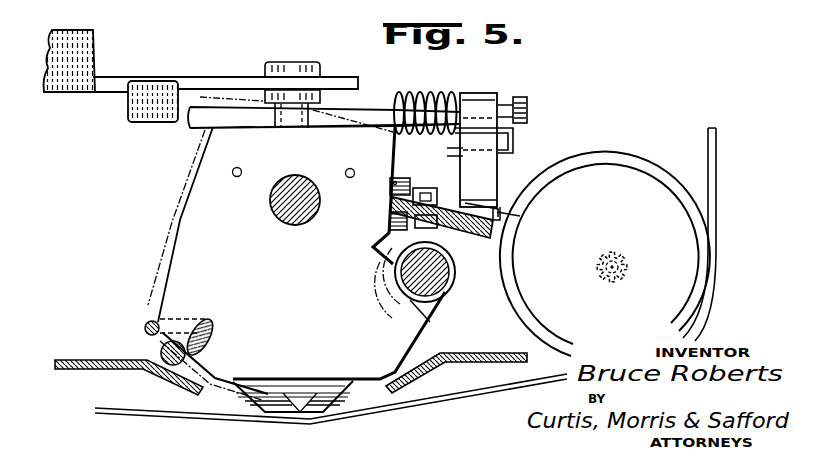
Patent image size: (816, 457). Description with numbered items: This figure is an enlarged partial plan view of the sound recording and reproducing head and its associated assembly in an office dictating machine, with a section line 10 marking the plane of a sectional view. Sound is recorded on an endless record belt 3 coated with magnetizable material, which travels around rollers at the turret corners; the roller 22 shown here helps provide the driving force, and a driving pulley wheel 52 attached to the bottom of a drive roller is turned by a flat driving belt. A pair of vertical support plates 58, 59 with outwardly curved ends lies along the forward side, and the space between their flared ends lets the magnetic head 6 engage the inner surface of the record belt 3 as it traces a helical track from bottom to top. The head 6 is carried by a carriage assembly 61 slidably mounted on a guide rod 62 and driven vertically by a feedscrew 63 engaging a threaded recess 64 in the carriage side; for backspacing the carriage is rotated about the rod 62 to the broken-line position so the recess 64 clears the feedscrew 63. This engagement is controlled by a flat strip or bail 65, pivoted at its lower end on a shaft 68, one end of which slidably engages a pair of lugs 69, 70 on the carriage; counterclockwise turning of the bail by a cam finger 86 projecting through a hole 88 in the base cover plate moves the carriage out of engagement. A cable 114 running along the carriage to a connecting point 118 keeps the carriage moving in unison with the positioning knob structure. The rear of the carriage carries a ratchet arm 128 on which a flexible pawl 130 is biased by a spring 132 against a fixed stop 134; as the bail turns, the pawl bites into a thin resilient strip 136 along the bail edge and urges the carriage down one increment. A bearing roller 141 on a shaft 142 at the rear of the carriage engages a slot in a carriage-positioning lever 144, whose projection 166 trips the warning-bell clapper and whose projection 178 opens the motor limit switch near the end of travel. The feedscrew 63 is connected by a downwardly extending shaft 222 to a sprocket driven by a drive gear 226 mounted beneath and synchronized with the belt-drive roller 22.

The record belt 3 is at (118, 415).
The recording and reproducing head 6 is at (255, 386).
The section line 10 is at (549, 54).
The roller 22 is at (603, 156).
The driving pulley wheel 52 is at (658, 164).
The vertical support plate 58 is at (78, 359).
The vertical support plate 59 is at (470, 362).
The carriage assembly 61 is at (178, 197).
The guide rod 62 is at (285, 207).
The feedscrew 63 is at (452, 276).
The threaded recess 64 is at (392, 270).
The bail 65 is at (392, 201).
The shaft 68 is at (448, 240).
The lug 69 is at (394, 181).
The lug 70 is at (392, 218).
The cam finger 86 is at (410, 189).
The hole 88 is at (444, 182).
The cable 114 is at (146, 325).
The connecting point 118 is at (200, 320).
The ratchet arm 128 is at (370, 107).
The flexible pawl 130 is at (492, 174).
The spring 132 is at (427, 95).
The fixed stop 134 is at (512, 136).
The resilient strip 136 is at (500, 215).
The bearing roller 141 is at (287, 63).
The shaft 142 is at (290, 120).
The carriage-positioning lever 144 is at (206, 82).
The projection 166 is at (138, 107).
The projection 178 is at (80, 43).
The shaft 222 is at (437, 304).
The drive gear 226 is at (628, 272).